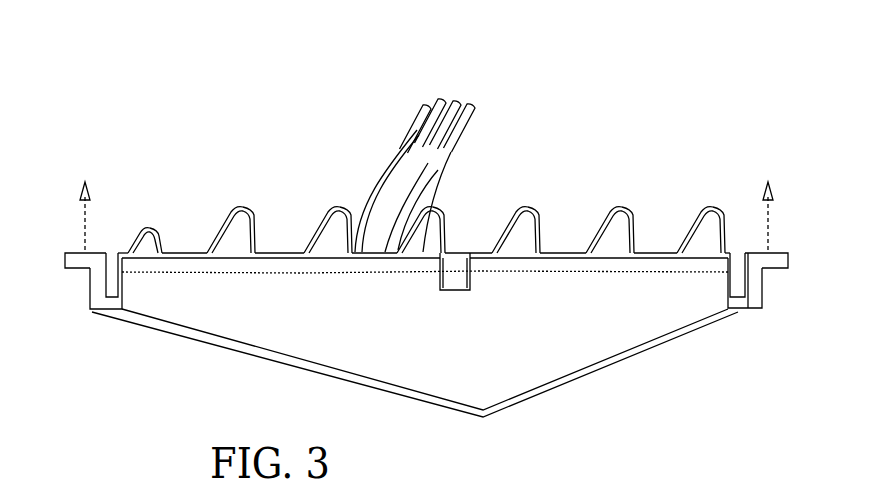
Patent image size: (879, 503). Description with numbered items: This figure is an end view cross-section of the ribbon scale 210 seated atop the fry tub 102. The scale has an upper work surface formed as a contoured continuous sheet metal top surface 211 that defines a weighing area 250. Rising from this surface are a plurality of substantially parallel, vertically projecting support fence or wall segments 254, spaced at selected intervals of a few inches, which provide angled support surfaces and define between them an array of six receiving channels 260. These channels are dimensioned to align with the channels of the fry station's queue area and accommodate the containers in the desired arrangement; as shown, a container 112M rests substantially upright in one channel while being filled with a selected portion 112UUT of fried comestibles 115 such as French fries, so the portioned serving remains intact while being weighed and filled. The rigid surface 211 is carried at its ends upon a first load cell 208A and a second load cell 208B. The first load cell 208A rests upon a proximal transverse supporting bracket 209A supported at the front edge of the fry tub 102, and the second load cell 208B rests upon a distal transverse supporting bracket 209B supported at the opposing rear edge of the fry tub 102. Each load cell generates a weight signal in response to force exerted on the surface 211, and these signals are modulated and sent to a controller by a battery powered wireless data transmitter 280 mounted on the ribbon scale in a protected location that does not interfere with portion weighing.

The fry tub 102 is at (600, 372).
The selected portion 112UUT is at (462, 84).
The container 112M is at (445, 156).
The fried comestibles 115 is at (418, 117).
The first load cell 208A is at (120, 284).
The second load cell 208B is at (735, 286).
The proximal transverse supporting bracket 209A is at (73, 270).
The distal transverse supporting bracket 209B is at (779, 269).
The ribbon scale 210 is at (667, 202).
The contoured continuous sheet metal top surface 211 is at (523, 208).
The weighing area 250 is at (267, 136).
The support fence or wall segments 254 is at (233, 212).
The receiving channels 260 is at (170, 209).
The wireless data transmitter 280 is at (455, 291).